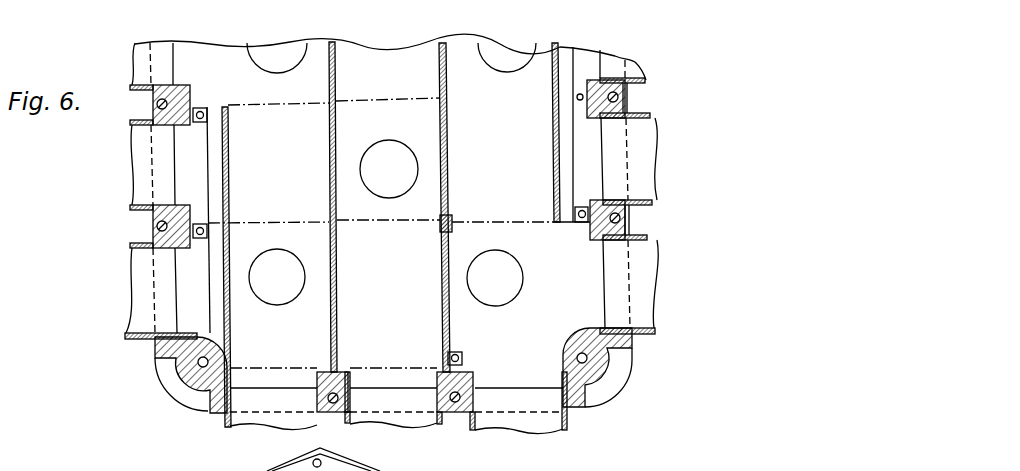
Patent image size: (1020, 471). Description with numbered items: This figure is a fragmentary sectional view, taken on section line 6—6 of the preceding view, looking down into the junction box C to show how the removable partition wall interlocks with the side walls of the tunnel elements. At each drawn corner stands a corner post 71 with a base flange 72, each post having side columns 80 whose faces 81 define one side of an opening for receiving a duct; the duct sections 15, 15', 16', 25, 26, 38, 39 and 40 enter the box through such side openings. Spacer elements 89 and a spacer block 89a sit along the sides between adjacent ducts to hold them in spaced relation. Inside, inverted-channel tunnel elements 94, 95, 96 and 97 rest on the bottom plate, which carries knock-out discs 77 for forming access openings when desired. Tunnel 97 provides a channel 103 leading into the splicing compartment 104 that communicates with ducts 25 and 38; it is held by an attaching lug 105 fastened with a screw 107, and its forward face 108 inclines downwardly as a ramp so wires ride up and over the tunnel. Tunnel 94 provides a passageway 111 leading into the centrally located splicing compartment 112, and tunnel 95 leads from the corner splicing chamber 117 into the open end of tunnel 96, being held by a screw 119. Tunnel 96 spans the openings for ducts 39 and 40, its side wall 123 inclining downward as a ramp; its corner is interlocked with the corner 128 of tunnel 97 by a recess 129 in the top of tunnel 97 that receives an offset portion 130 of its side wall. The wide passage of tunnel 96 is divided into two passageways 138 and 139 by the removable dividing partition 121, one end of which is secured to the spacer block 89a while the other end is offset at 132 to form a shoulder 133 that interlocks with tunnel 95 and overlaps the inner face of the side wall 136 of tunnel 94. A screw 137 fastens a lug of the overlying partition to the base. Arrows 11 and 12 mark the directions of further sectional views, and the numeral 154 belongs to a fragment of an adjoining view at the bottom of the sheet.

The section line 6 is at (642, 196).
The flange 11 is at (638, 75).
The wall 12 is at (660, 123).
The duct section 15 is at (669, 59).
The duct section 15' is at (115, 43).
The side wall 16' is at (108, 181).
The duct 25 is at (658, 283).
The duct section 26 is at (128, 295).
The duct 38 is at (545, 430).
The duct 39 is at (385, 424).
The duct 40 is at (251, 426).
The corner post 71 is at (182, 380).
The base flange 72 is at (183, 396).
The knock-out discs 77 is at (306, 70).
The side column 80 is at (157, 346).
The side face 81 is at (167, 333).
The spacer element 89 is at (152, 108).
The spacer element 89a is at (333, 413).
The tunnel element 94 is at (336, 70).
The tunnel element 95 is at (229, 137).
The tunnel element 96 is at (444, 288).
The tunnel element 97 is at (554, 188).
The channel 103 is at (465, 55).
The splicing compartment 104 is at (531, 340).
The attaching lug 105 is at (587, 230).
The screw 107 is at (581, 205).
The forward face 108 is at (553, 146).
The passageway 111 is at (400, 57).
The splicing compartment 112 is at (373, 140).
The corner splicing chamber 117 is at (228, 71).
The screw 119 is at (198, 123).
The divider wall 121 is at (337, 272).
The side wall 123 is at (216, 286).
The corner 128 is at (441, 226).
The recess 129 is at (452, 216).
The offset portion 130 is at (451, 228).
The offset 132 is at (329, 165).
The shoulder 133 is at (335, 108).
The side wall 136 is at (342, 46).
The screw 137 is at (581, 94).
The passageway sub-division 138 is at (311, 351).
The passageway sub-division 139 is at (411, 340).
The base 154 is at (476, 470).
The junction box C is at (668, 156).